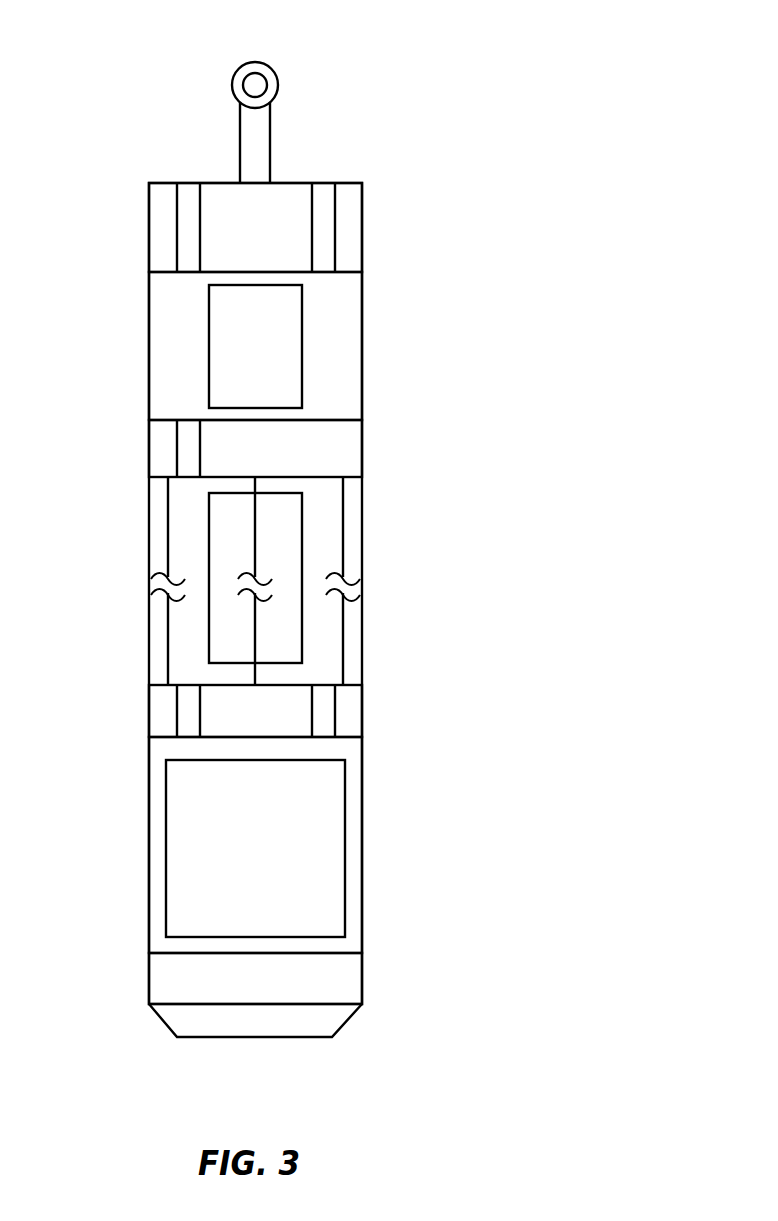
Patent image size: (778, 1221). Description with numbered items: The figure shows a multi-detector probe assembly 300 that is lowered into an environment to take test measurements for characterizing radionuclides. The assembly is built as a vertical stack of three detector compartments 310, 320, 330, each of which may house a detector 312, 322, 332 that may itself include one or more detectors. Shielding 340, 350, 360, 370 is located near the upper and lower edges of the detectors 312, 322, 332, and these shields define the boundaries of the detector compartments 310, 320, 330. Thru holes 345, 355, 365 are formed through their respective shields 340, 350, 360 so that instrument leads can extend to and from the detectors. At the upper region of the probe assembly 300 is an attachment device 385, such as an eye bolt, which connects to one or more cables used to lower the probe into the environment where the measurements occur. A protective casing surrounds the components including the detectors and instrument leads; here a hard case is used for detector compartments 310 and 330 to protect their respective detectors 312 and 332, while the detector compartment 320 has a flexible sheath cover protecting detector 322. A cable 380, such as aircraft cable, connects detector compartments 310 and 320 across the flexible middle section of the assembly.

The multi-detector probe assembly 300 is at (432, 62).
The attachment device 385 is at (272, 123).
The shielding 340 is at (362, 247).
The thru holes 345 is at (183, 232).
The detector compartment 310 is at (362, 353).
The detector 312 is at (283, 329).
The shielding 350 is at (362, 446).
The thru holes 355 is at (183, 447).
The cable 380 is at (167, 640).
The detector compartment 320 is at (329, 637).
The detector 322 is at (289, 528).
The shielding 360 is at (362, 712).
The thru holes 365 is at (176, 708).
The detector compartment 330 is at (362, 868).
The detector 332 is at (302, 817).
The shielding 370 is at (362, 978).